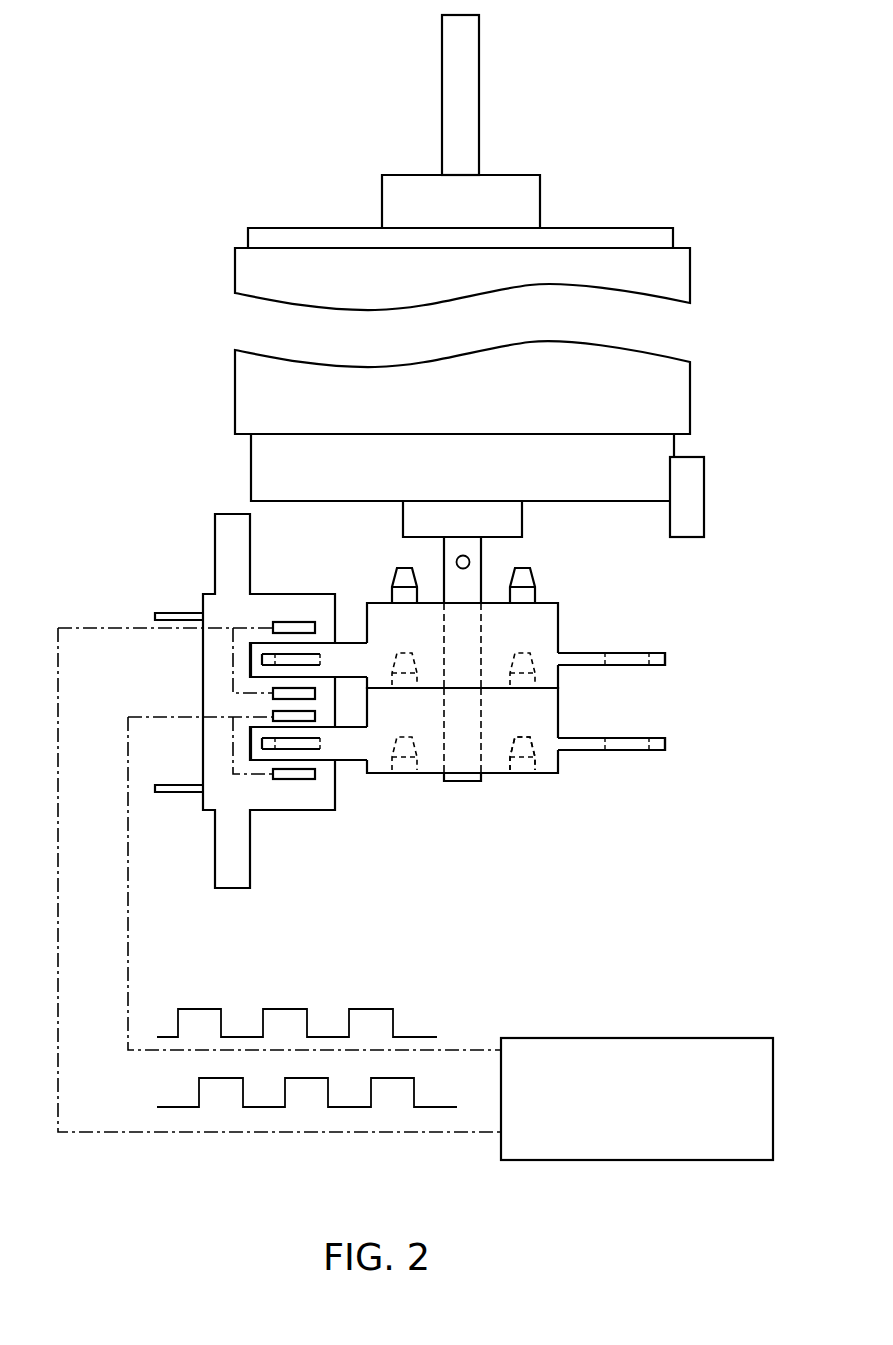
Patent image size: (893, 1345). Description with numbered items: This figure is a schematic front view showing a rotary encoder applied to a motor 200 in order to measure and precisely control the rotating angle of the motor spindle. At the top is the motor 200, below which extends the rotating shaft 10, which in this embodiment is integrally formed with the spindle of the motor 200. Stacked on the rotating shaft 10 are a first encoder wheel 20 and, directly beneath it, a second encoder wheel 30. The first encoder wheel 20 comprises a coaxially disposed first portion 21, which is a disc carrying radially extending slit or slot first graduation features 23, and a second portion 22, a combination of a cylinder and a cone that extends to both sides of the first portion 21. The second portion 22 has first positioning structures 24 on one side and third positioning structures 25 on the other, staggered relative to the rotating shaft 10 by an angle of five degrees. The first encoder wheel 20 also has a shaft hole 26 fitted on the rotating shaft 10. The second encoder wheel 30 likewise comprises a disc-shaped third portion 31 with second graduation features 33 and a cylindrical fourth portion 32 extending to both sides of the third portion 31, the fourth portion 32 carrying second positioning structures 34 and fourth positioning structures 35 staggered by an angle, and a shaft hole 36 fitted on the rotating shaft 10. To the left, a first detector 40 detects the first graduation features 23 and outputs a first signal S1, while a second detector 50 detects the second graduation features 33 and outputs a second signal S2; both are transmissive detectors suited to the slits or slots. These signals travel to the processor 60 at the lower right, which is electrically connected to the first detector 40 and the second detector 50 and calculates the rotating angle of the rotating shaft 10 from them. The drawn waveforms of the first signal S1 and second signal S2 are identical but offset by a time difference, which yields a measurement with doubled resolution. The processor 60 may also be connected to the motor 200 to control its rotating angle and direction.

The motor 200 is at (690, 392).
The rotating shaft 10 is at (466, 781).
The first encoder wheel 20 is at (490, 602).
The second portion 22 is at (560, 618).
The first portion 21 is at (665, 657).
The first graduation features 23 is at (657, 650).
The third positioning structures 25 is at (525, 580).
The shaft hole 26 is at (443, 635).
The first positioning structures 24 is at (530, 657).
The second positioning structures 34 is at (463, 753).
The second encoder wheel 30 is at (490, 774).
The fourth portion 32 is at (560, 710).
The third portion 31 is at (665, 741).
The second graduation features 33 is at (657, 736).
The fourth positioning structures 35 is at (530, 742).
The shaft hole 36 is at (438, 730).
The first detector 40 is at (302, 694).
The second detector 50 is at (307, 777).
The processor 60 is at (647, 1038).
The first signal S1 is at (279, 880).
The second signal S2 is at (314, 883).